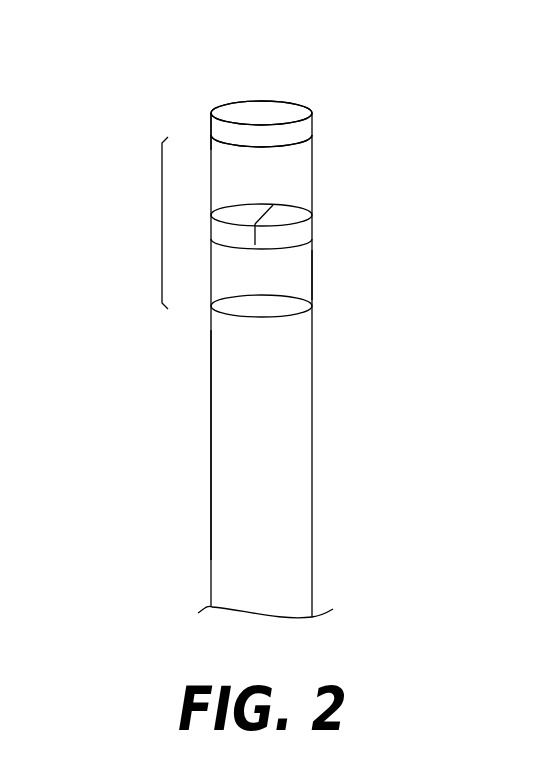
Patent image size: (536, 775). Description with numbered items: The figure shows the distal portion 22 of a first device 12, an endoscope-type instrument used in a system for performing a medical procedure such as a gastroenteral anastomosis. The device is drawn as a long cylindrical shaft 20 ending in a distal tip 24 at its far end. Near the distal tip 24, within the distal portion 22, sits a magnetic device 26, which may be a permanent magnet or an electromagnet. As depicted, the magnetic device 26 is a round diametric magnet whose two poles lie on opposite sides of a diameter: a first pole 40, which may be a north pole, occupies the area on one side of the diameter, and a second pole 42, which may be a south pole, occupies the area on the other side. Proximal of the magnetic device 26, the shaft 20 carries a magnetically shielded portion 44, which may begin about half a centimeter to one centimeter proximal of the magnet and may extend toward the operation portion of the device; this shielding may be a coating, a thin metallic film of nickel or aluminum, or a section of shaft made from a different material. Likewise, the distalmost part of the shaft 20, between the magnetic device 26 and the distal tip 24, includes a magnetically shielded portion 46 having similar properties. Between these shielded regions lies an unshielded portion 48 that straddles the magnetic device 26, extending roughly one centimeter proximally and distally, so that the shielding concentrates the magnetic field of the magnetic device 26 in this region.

The first device 12 is at (140, 128).
The shaft 20 is at (312, 454).
The distal portion 22 is at (336, 103).
The distal tip 24 is at (250, 102).
The magnetic device 26 is at (300, 205).
The first pole 40 is at (293, 250).
The second pole 42 is at (230, 250).
The magnetically shielded portion 44 is at (211, 457).
The magnetically shielded portion 46 is at (218, 107).
The unshielded portion 48 is at (162, 222).